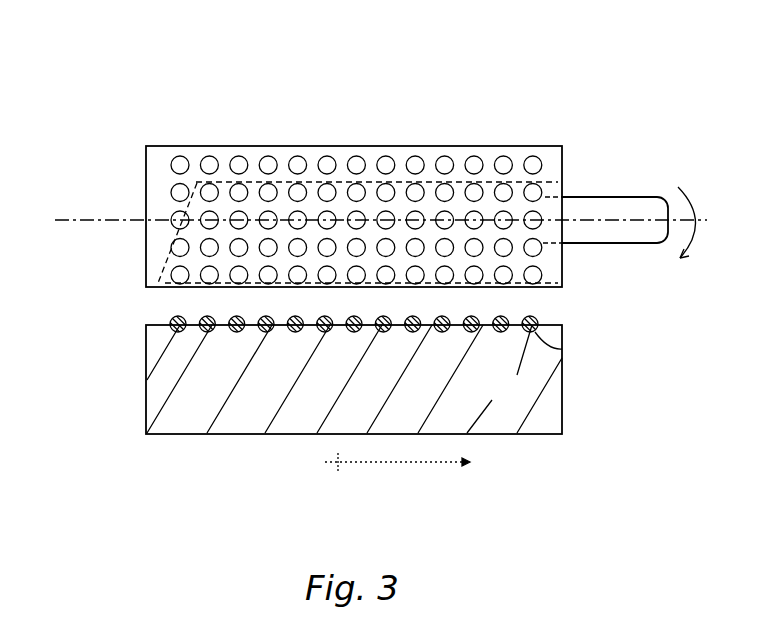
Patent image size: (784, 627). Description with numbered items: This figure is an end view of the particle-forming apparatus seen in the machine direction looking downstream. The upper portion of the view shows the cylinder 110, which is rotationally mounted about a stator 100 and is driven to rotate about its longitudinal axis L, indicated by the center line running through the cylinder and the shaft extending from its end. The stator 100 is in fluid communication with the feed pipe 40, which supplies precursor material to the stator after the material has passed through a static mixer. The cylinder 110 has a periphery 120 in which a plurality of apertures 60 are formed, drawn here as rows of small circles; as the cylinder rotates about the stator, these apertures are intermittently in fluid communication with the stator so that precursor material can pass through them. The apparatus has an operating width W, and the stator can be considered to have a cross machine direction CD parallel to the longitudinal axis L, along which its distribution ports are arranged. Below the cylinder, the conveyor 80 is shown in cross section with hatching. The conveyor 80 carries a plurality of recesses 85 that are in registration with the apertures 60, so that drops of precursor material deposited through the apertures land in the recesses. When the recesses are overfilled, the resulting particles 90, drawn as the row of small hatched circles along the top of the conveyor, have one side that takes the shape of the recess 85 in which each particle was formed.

The feed pipe 40 is at (620, 207).
The apertures 60 is at (272, 184).
The conveyor 80 is at (513, 395).
The recesses 85 is at (172, 332).
The particles 90 is at (222, 287).
The stator 100 is at (422, 157).
The cylinder 110 is at (523, 148).
The periphery 120 is at (194, 180).
The longitudinal axis L is at (88, 220).
The operating width W is at (182, 320).
The cross machine direction CD is at (358, 462).